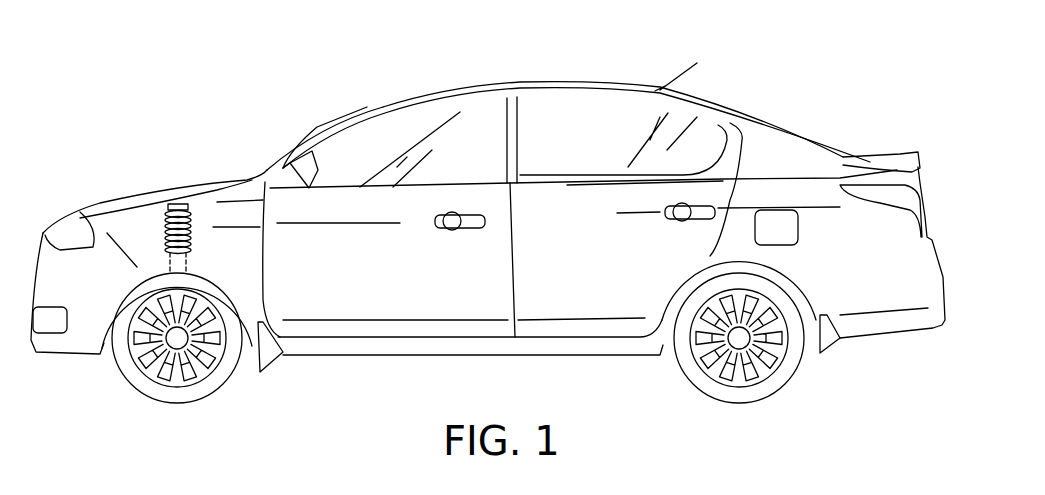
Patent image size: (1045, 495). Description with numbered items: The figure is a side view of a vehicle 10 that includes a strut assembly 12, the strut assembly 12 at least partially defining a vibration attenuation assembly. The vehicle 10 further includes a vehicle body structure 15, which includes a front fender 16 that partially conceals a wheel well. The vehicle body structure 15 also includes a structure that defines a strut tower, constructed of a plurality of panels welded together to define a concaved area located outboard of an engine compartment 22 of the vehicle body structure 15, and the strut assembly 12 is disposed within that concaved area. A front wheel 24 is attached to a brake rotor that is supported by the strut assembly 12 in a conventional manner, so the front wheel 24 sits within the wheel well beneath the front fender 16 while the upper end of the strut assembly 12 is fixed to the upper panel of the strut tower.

The vehicle 10 is at (768, 53).
The strut assembly 12 is at (200, 233).
The vehicle body structure 15 is at (424, 86).
The front fender 16 is at (133, 240).
The engine compartment 22 is at (163, 195).
The front wheel 24 is at (210, 395).